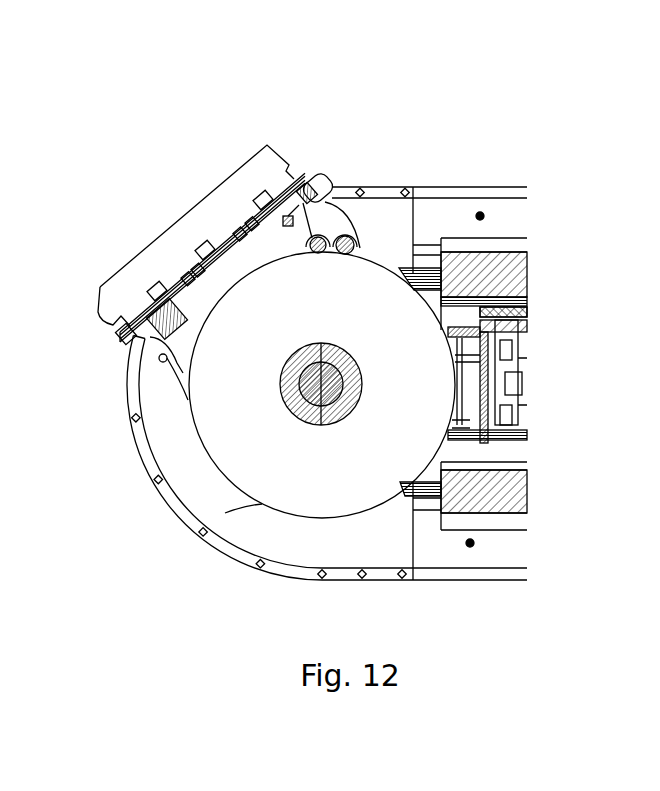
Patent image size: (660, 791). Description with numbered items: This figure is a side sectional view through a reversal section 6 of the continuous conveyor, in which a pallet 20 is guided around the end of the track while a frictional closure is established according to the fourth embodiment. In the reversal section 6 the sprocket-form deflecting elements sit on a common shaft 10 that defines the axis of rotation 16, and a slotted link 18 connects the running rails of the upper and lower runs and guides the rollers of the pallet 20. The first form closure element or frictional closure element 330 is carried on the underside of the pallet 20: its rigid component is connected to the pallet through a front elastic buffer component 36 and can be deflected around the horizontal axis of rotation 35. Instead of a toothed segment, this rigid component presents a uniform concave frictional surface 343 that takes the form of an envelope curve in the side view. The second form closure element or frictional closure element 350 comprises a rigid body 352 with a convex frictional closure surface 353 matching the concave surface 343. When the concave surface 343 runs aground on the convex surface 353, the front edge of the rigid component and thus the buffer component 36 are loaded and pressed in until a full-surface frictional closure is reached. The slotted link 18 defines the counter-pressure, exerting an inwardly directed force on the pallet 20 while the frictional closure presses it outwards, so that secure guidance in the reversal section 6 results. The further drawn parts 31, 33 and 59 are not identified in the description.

The reversal section 6 is at (181, 556).
The shaft 10 is at (321, 405).
The axis of rotation 16 is at (322, 343).
The slotted link 18 is at (480, 216).
The pallet 20 is at (209, 186).
The guide rail 31 is at (268, 241).
The slide block 33 is at (248, 228).
The axis of rotation 35 is at (308, 170).
The elastic buffer component 36 is at (130, 328).
The fastener 59 is at (225, 470).
The first form closure element or frictional closure element 330 is at (199, 261).
The concave frictional surface 343 is at (172, 343).
The second form closure element or frictional closure element 350 is at (205, 441).
The rigid body 352 is at (256, 383).
The convex frictional closure surface 353 is at (243, 497).